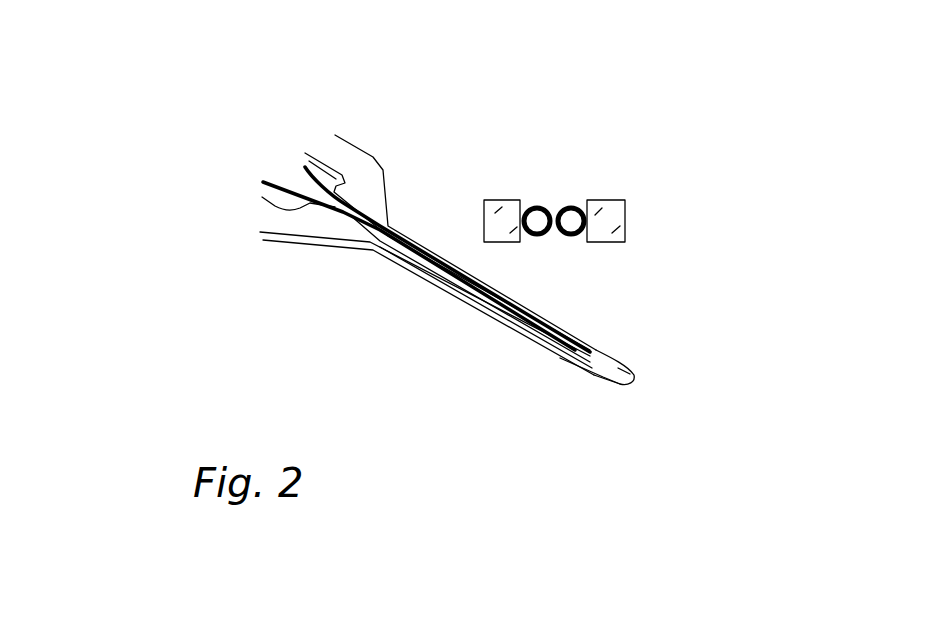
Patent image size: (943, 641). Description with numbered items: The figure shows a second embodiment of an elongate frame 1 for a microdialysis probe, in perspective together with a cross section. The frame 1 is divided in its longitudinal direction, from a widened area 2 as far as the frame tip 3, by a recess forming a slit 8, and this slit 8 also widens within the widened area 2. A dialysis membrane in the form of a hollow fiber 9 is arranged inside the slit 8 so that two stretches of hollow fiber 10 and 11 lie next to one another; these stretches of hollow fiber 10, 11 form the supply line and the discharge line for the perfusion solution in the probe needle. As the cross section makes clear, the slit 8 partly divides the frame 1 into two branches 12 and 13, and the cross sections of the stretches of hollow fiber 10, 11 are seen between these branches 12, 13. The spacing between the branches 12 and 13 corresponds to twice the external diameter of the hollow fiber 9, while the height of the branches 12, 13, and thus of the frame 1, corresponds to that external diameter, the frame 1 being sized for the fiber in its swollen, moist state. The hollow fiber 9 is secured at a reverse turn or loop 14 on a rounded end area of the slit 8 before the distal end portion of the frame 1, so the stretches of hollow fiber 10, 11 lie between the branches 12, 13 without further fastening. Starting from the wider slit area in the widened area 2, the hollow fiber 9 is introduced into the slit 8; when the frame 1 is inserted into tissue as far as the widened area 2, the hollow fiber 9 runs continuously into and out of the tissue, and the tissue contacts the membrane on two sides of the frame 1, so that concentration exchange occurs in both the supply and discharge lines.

The elongate frame 1 is at (358, 275).
The widened area 2 is at (362, 168).
The frame tip 3 is at (637, 377).
The slit 8 is at (567, 347).
The hollow fiber 9 is at (262, 198).
The stretch of hollow fiber 10 is at (542, 197).
The stretch of hollow fiber 11 is at (572, 203).
The branch 12 is at (498, 200).
The branch 13 is at (622, 200).
The reverse turn or loop 14 is at (607, 351).